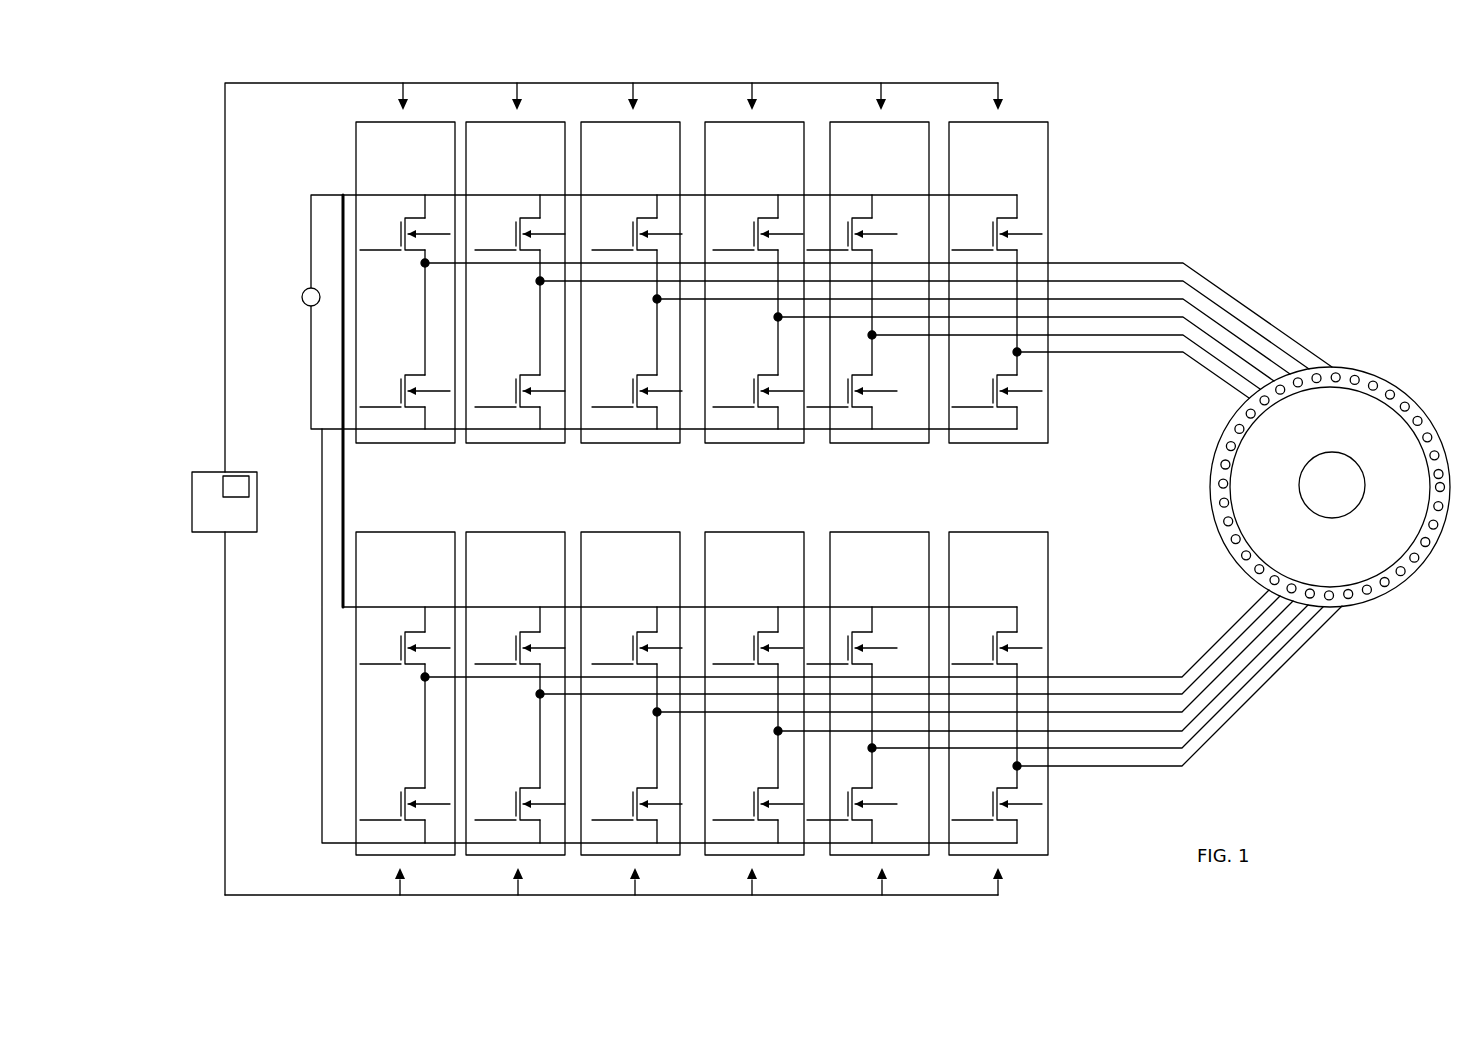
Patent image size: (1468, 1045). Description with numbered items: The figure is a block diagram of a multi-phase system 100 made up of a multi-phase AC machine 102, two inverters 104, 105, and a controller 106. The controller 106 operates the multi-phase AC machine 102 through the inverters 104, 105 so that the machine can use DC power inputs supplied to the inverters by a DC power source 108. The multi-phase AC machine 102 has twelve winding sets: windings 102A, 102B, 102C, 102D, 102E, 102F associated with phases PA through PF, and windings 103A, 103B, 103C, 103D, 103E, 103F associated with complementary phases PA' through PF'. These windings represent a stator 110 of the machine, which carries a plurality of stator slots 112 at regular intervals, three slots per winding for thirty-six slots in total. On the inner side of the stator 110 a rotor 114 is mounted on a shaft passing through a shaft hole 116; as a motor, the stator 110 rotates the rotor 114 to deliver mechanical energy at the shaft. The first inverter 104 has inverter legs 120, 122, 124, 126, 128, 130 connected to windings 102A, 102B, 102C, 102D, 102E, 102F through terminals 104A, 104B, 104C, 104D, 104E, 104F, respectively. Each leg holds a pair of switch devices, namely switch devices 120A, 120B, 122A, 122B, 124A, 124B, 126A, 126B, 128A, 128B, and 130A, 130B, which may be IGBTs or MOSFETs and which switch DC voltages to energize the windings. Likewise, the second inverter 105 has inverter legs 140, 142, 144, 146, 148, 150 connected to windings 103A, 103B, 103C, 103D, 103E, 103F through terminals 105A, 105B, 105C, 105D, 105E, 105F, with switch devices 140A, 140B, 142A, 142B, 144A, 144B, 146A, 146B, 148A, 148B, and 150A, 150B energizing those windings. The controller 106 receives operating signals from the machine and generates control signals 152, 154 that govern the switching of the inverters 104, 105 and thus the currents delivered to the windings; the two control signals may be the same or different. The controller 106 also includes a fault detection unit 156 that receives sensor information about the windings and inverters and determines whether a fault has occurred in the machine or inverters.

The multi-phase system 100 is at (1205, 102).
The multi-phase AC machine 102 is at (1334, 465).
The winding 102A is at (1207, 278).
The winding 102B is at (1260, 315).
The winding 102C is at (1276, 352).
The winding 102D is at (1212, 339).
The winding 102E is at (1232, 368).
The winding 102F is at (1236, 395).
The winding 103A is at (1248, 610).
The winding 103B is at (1233, 643).
The winding 103C is at (1224, 669).
The winding 103D is at (1296, 617).
The winding 103E is at (1276, 655).
The winding 103F is at (1246, 703).
The inverter 104 is at (330, 256).
The terminal 104A is at (425, 263).
The terminal 104B is at (540, 281).
The terminal 104C is at (657, 299).
The terminal 104D is at (778, 317).
The terminal 104E is at (872, 335).
The terminal 104F is at (1017, 352).
The inverter 105 is at (328, 718).
The terminal 105A is at (425, 677).
The terminal 105B is at (540, 694).
The terminal 105C is at (657, 712).
The terminal 105D is at (778, 731).
The terminal 105E is at (872, 748).
The terminal 105F is at (1017, 766).
The controller 106 is at (207, 476).
The DC power source 108 is at (309, 308).
The stator 110 is at (1404, 580).
The stator slots 112 is at (1424, 517).
The rotor 114 is at (1258, 420).
The shaft hole 116 is at (1348, 503).
The inverter leg 120 is at (356, 121).
The switch device 120A is at (401, 210).
The switch device 120B is at (398, 414).
The inverter leg 122 is at (466, 121).
The switch device 122A is at (516, 210).
The switch device 122B is at (513, 414).
The inverter leg 124 is at (581, 121).
The switch device 124A is at (633, 210).
The switch device 124B is at (630, 414).
The inverter leg 126 is at (705, 121).
The switch device 126A is at (754, 210).
The switch device 126B is at (751, 414).
The inverter leg 128 is at (830, 121).
The switch device 128A is at (849, 210).
The switch device 128B is at (845, 414).
The inverter leg 130 is at (949, 121).
The switch device 130A is at (993, 210).
The switch device 130B is at (990, 414).
The inverter leg 140 is at (356, 532).
The switch device 140A is at (401, 622).
The switch device 140B is at (398, 830).
The inverter leg 142 is at (466, 532).
The switch device 142A is at (516, 622).
The switch device 142B is at (513, 830).
The inverter leg 144 is at (581, 532).
The switch device 144A is at (633, 622).
The switch device 144B is at (630, 830).
The inverter leg 146 is at (705, 532).
The switch device 146A is at (754, 622).
The switch device 146B is at (751, 830).
The inverter leg 148 is at (830, 532).
The switch device 148A is at (849, 622).
The switch device 148B is at (845, 830).
The inverter leg 150 is at (949, 532).
The switch device 150A is at (993, 622).
The switch device 150B is at (990, 830).
The control signal 152 is at (227, 125).
The control signal 154 is at (227, 835).
The fault detection unit 156 is at (240, 472).